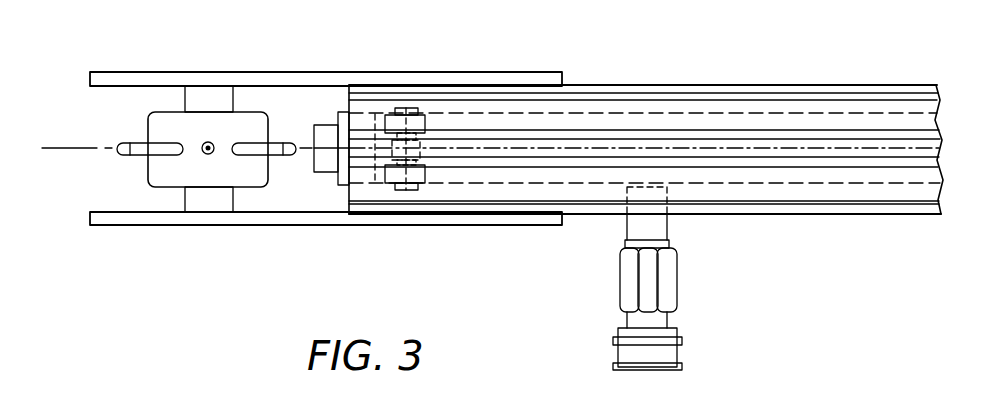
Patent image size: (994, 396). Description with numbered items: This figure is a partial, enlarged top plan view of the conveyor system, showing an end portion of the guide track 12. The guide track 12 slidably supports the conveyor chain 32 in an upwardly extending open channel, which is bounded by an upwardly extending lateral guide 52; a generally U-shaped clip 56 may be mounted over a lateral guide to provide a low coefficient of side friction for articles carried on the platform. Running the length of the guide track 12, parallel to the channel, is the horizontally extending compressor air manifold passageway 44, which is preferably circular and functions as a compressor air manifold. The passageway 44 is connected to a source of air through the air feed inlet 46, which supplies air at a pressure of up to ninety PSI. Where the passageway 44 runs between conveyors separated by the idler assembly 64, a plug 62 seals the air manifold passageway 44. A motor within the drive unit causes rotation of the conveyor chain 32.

The guide track 12 is at (622, 84).
The conveyor chain 32 is at (426, 113).
The compressor air manifold passageway 44 is at (380, 115).
The air feed inlet 46 is at (704, 337).
The lateral guide 52 is at (730, 84).
The U-shaped clip 56 is at (805, 205).
The plug 62 is at (320, 125).
The idler assembly 64 is at (168, 196).